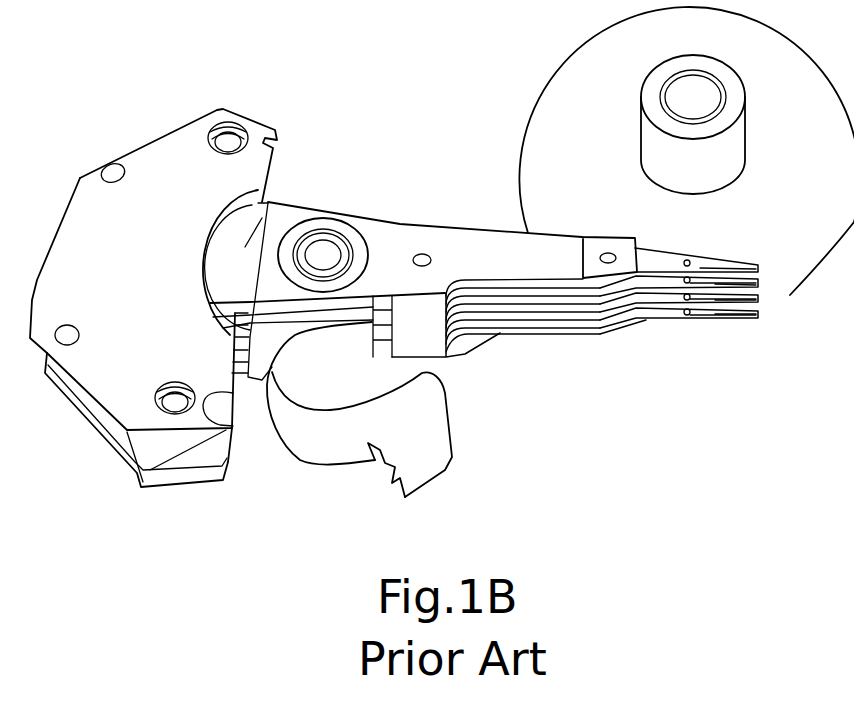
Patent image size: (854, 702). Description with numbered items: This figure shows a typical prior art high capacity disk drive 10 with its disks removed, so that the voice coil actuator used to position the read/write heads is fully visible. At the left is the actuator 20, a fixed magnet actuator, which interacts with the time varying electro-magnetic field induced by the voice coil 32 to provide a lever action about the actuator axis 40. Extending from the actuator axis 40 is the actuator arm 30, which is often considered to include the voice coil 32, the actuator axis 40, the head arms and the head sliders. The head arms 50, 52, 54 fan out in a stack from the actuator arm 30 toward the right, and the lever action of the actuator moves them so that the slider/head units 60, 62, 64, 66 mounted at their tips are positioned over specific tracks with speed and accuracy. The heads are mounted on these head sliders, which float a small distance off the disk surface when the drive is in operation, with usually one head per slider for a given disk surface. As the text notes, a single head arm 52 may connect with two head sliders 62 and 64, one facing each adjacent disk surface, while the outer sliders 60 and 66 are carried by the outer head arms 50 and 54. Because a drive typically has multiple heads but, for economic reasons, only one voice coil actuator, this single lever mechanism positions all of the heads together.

The high capacity disk drive 10 is at (349, 53).
The actuator 20 is at (167, 157).
The actuator arm 30 is at (600, 243).
The voice coil 32 is at (228, 268).
The actuator axis 40 is at (325, 248).
The head arm 50 is at (520, 245).
The head arm 52 is at (590, 305).
The head arm 54 is at (560, 327).
The slider/head unit 60 is at (733, 262).
The slider/head unit 62 is at (745, 280).
The slider/head unit 64 is at (747, 297).
The slider/head unit 66 is at (727, 323).